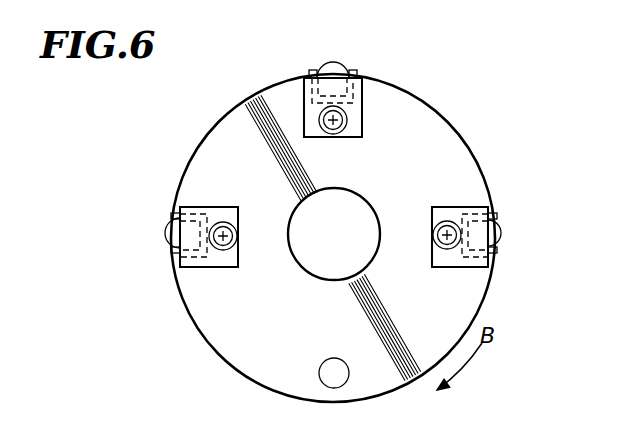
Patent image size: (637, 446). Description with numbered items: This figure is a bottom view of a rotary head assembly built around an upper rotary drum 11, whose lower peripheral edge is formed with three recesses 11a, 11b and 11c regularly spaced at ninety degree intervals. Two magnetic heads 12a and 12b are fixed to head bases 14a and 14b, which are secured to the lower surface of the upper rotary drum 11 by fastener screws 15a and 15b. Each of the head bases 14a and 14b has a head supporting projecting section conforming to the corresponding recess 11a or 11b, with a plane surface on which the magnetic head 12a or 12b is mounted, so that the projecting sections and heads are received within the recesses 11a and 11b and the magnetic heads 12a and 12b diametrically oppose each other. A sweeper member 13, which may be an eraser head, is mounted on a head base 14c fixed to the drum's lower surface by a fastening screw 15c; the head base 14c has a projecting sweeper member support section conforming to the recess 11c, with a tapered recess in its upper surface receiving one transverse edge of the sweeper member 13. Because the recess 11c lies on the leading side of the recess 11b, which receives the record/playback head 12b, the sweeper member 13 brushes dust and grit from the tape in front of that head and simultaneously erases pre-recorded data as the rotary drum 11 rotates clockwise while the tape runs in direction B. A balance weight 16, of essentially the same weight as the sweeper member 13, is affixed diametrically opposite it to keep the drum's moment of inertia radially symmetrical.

The upper rotary drum 11 is at (474, 153).
The recess 11a is at (173, 216).
The recess 11b is at (497, 253).
The recess 11c is at (351, 72).
The magnetic head 12a is at (166, 236).
The magnetic head 12b is at (500, 235).
The sweeper member 13 is at (333, 68).
The head base 14a is at (226, 258).
The head base 14b is at (447, 260).
The head base 14c is at (357, 123).
The fastener screw 15a is at (223, 222).
The fastener screw 15b is at (446, 221).
The fastening screw 15c is at (332, 134).
The balance weight 16 is at (319, 370).